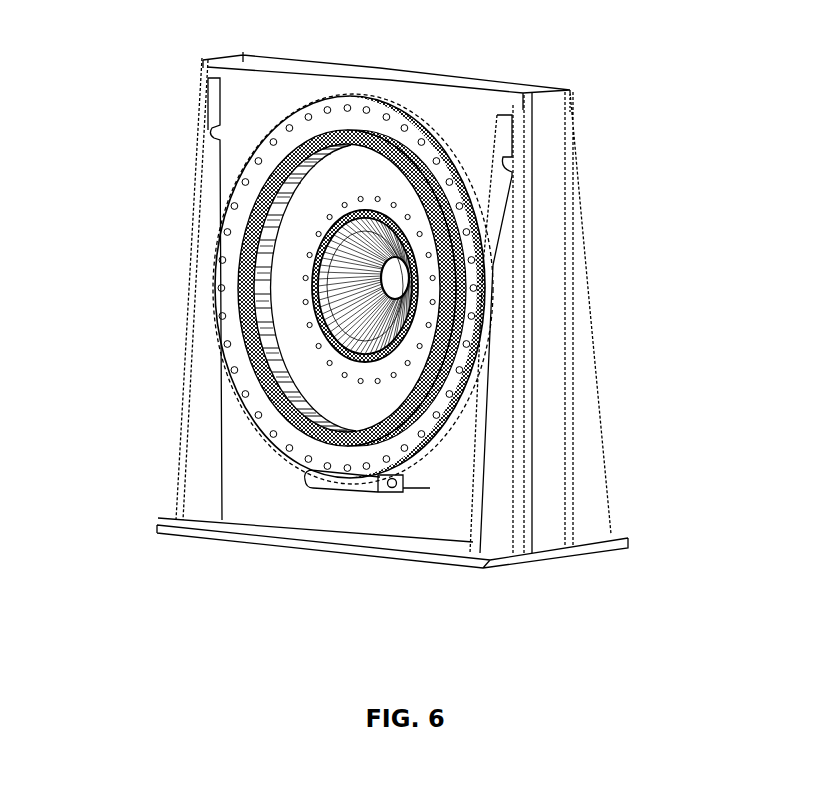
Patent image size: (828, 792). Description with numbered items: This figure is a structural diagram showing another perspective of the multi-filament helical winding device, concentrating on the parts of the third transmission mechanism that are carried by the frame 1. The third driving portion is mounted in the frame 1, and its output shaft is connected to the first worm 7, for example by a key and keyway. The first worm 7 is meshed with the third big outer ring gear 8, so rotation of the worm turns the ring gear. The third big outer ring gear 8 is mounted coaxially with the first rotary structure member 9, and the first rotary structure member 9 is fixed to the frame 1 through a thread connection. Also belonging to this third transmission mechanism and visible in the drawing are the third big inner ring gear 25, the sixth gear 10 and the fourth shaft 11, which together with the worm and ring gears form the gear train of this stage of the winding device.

The frame 1 is at (508, 102).
The first worm 7 is at (430, 488).
The third big outer ring gear 8 is at (462, 190).
The first rotary structure member 9 is at (443, 148).
The sixth gear 10 is at (240, 240).
The fourth shaft 11 is at (258, 192).
The third big inner ring gear 25 is at (460, 270).